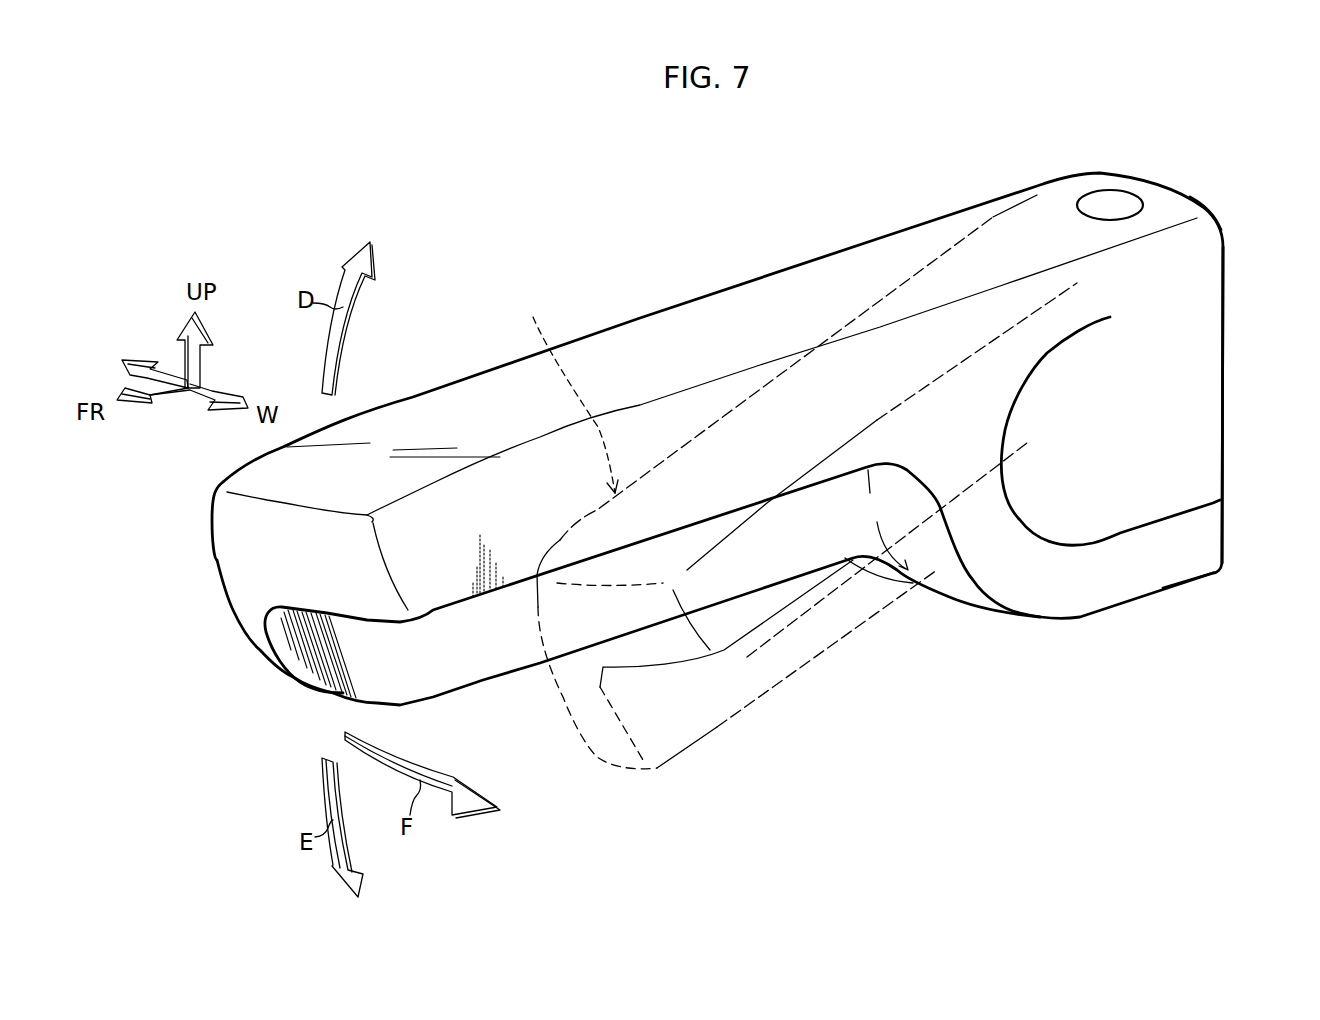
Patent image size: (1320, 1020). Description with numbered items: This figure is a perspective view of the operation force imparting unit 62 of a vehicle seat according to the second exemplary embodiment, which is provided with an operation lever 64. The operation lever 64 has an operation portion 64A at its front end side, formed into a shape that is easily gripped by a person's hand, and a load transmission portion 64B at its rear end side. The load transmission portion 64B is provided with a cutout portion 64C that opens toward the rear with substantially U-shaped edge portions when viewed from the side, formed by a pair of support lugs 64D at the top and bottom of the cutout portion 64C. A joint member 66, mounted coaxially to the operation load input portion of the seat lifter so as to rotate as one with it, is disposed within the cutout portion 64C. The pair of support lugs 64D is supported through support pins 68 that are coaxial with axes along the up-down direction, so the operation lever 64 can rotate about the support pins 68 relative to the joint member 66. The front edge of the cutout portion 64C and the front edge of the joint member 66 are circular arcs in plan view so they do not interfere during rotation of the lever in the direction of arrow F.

The operation force imparting unit 62 is at (857, 163).
The operation lever 64 is at (775, 228).
The operation portion 64A is at (519, 382).
The load transmission portion 64B is at (1044, 175).
The cutout portion 64C is at (1180, 281).
The support lugs 64D is at (1200, 250).
The joint member 66 is at (1193, 402).
The support pins 68 is at (1118, 203).